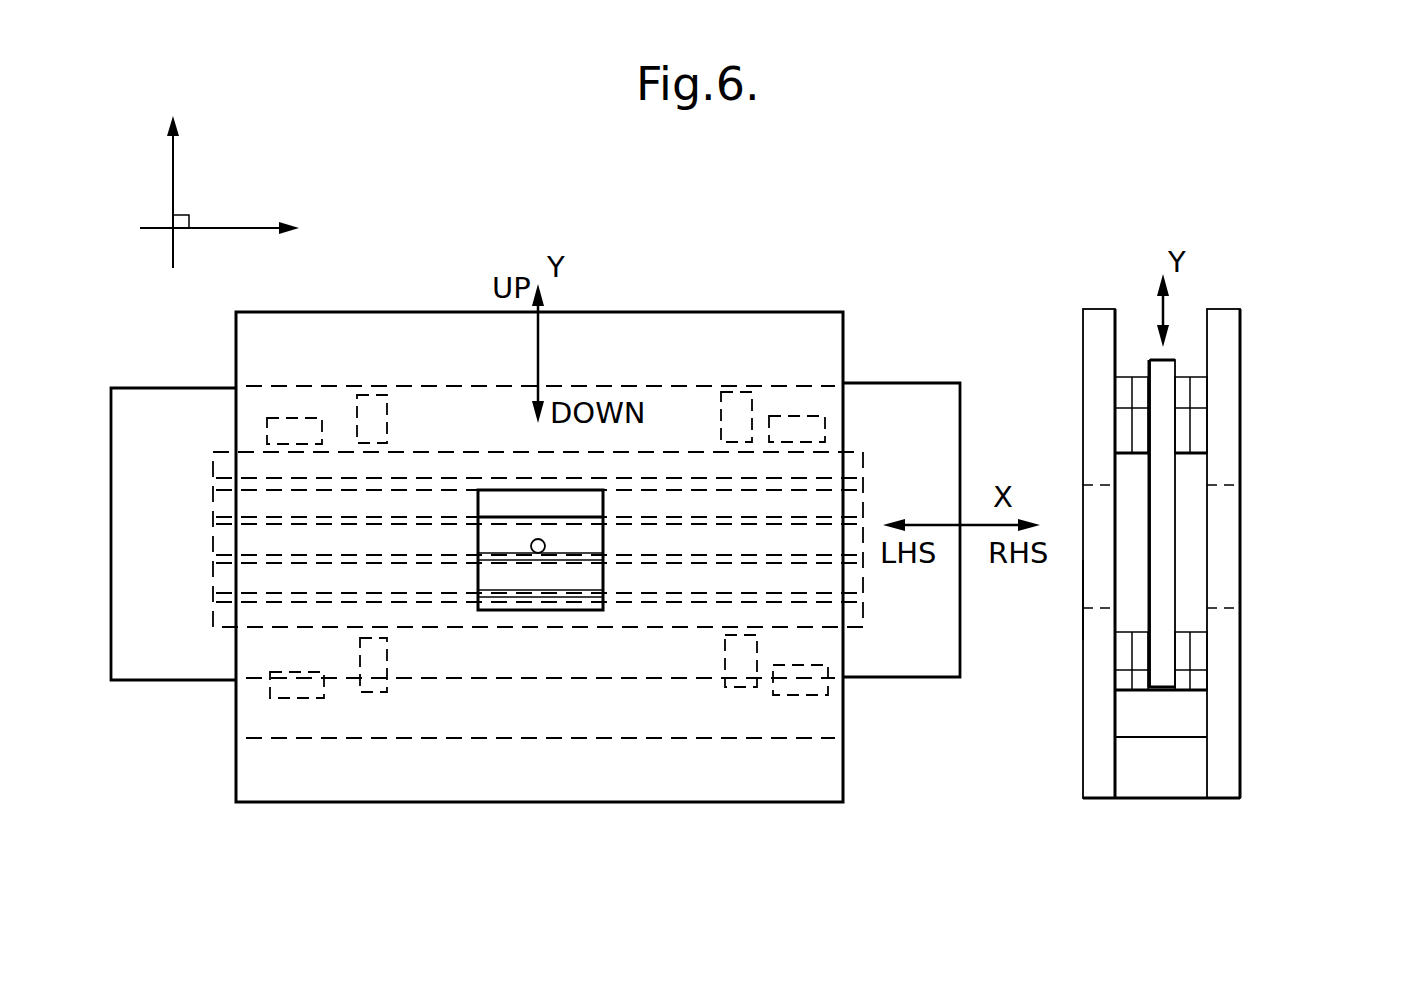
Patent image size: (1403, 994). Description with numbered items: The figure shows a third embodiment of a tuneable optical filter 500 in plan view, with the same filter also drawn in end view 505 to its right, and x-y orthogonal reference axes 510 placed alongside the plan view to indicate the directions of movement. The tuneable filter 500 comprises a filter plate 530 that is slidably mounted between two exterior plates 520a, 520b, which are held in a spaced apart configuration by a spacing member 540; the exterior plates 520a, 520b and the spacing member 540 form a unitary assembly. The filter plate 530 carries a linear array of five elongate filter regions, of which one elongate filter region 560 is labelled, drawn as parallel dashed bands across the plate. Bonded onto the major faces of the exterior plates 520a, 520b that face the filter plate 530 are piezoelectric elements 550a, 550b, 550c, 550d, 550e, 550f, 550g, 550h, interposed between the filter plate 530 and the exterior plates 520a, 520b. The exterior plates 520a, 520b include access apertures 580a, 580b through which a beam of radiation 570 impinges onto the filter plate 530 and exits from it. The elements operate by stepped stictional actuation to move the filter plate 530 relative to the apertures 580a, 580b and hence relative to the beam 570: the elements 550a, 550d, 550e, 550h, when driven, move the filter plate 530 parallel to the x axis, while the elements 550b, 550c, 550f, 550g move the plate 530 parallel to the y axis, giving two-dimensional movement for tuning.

The tuneable optical filter 500 is at (828, 203).
The end view of tuneable filter 505 is at (1250, 200).
The x-y orthogonal reference axes 510 is at (286, 152).
The exterior plate 520a is at (1308, 295).
The exterior plate 520b is at (422, 320).
The filter plate 530 is at (153, 639).
The spacing member 540 is at (565, 788).
The piezoelectric element 550a is at (293, 430).
The piezoelectric element 550b is at (366, 408).
The piezoelectric element 550c is at (737, 405).
The piezoelectric element 550d is at (792, 428).
The piezoelectric element 550e is at (817, 692).
The piezoelectric element 550f is at (743, 663).
The piezoelectric element 550g is at (373, 688).
The piezoelectric element 550h is at (275, 692).
The elongate filter region 560 is at (277, 508).
The beam of radiation 570 is at (540, 555).
The access aperture 580a is at (1093, 567).
The access aperture 580b is at (1222, 560).